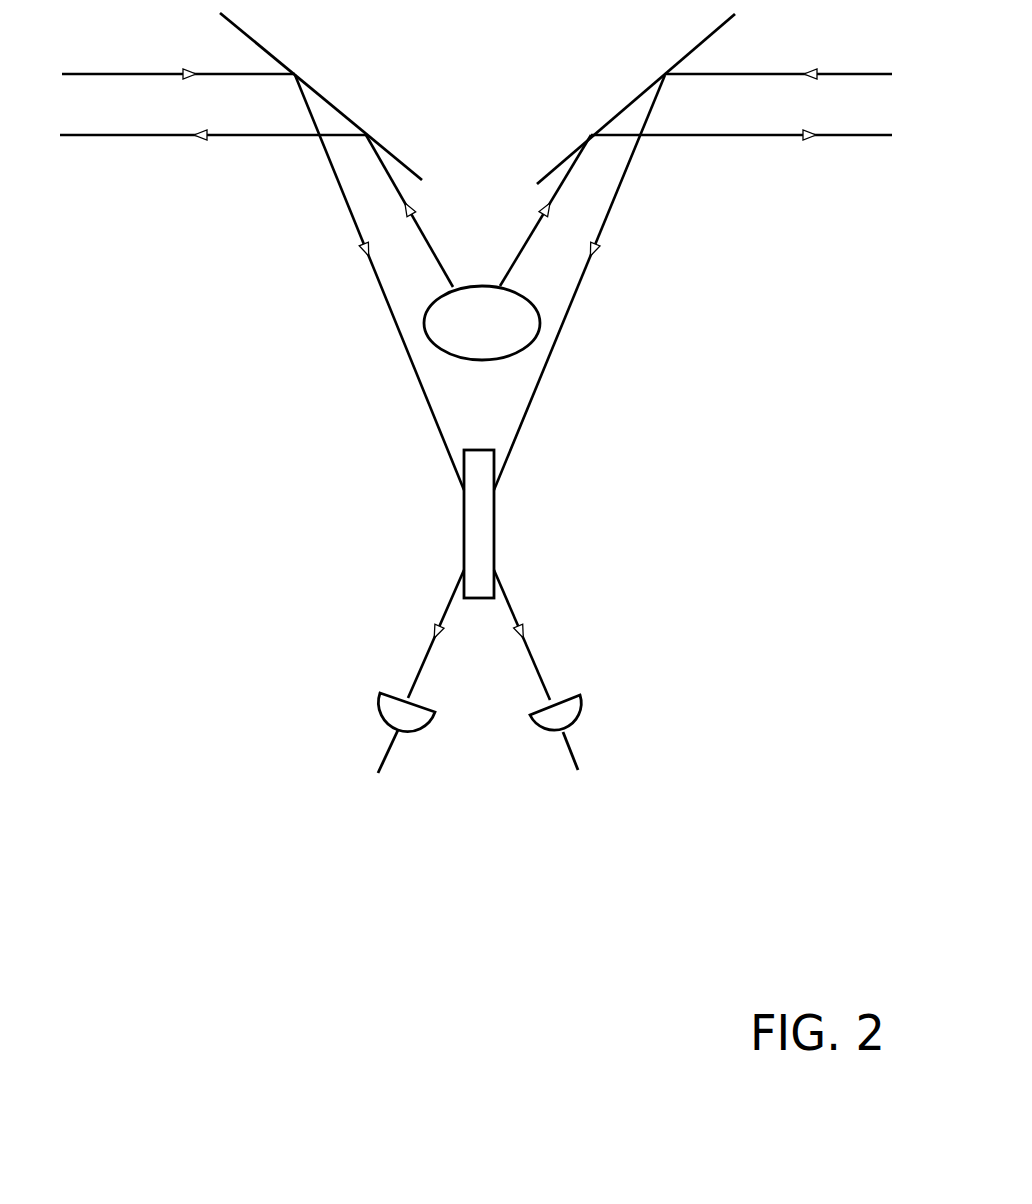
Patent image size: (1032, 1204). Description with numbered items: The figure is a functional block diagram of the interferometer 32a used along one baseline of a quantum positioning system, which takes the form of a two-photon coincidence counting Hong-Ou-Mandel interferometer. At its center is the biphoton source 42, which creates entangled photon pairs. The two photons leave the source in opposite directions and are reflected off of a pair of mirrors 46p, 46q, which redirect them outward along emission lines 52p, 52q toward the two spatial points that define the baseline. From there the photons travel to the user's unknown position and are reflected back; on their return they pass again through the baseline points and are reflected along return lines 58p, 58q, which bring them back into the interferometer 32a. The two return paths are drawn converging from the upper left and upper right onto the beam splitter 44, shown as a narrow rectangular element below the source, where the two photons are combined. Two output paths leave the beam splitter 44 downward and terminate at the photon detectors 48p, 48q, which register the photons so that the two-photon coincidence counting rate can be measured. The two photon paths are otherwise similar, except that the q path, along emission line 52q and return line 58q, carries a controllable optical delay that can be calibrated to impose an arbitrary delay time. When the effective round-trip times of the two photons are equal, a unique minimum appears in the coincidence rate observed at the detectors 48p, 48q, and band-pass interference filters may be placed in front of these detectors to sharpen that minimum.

The interferometer 32a is at (677, 518).
The biphoton source 42 is at (503, 362).
The beam splitter 44 is at (463, 525).
The mirror 46p is at (348, 118).
The mirror 46q is at (602, 122).
The photon detector 48p is at (380, 708).
The photon detector 48q is at (580, 708).
The emission line 52p is at (153, 137).
The emission line 52q is at (765, 137).
The return line 58p is at (122, 77).
The return line 58q is at (773, 78).